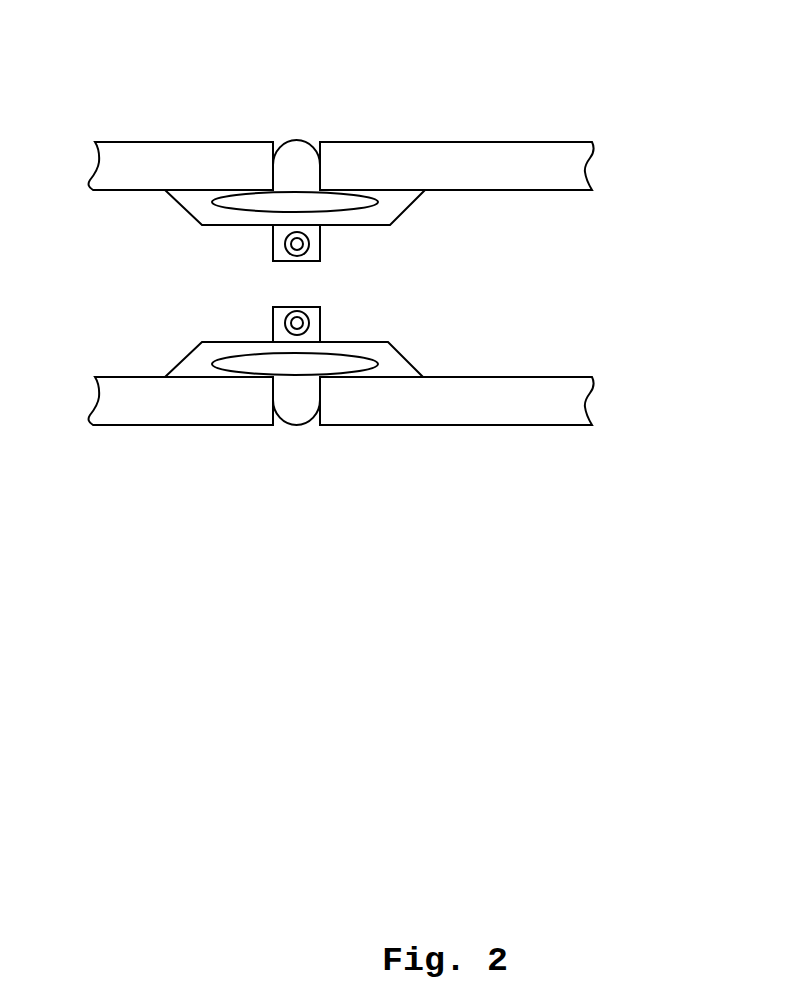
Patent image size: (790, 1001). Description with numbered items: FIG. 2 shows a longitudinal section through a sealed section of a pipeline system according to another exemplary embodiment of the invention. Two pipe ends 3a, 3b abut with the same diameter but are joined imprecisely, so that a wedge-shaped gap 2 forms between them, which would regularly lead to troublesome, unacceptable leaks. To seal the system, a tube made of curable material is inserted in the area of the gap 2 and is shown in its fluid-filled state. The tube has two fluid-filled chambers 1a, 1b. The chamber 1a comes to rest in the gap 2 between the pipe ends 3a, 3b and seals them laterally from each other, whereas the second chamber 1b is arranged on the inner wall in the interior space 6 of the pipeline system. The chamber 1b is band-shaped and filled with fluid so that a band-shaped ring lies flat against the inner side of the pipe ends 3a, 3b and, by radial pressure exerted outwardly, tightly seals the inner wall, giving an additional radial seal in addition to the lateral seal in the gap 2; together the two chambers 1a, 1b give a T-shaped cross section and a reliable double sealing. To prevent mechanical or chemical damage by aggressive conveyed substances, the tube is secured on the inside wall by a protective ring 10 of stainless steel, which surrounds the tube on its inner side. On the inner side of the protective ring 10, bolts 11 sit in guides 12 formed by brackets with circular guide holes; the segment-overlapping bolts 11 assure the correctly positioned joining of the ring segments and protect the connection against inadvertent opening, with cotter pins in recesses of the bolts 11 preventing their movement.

The chamber 1a is at (297, 162).
The second chamber 1b is at (330, 198).
The gap 2 is at (273, 148).
The pipe end 3a is at (188, 162).
The pipe end 3b is at (487, 163).
The interior space 6 is at (485, 285).
The protective ring 10 is at (413, 358).
The bolts 11 is at (297, 323).
The guides 12 is at (308, 338).